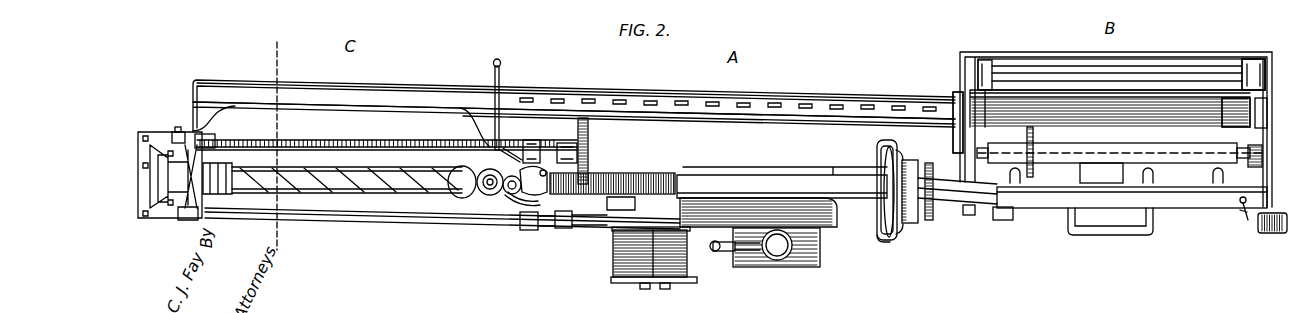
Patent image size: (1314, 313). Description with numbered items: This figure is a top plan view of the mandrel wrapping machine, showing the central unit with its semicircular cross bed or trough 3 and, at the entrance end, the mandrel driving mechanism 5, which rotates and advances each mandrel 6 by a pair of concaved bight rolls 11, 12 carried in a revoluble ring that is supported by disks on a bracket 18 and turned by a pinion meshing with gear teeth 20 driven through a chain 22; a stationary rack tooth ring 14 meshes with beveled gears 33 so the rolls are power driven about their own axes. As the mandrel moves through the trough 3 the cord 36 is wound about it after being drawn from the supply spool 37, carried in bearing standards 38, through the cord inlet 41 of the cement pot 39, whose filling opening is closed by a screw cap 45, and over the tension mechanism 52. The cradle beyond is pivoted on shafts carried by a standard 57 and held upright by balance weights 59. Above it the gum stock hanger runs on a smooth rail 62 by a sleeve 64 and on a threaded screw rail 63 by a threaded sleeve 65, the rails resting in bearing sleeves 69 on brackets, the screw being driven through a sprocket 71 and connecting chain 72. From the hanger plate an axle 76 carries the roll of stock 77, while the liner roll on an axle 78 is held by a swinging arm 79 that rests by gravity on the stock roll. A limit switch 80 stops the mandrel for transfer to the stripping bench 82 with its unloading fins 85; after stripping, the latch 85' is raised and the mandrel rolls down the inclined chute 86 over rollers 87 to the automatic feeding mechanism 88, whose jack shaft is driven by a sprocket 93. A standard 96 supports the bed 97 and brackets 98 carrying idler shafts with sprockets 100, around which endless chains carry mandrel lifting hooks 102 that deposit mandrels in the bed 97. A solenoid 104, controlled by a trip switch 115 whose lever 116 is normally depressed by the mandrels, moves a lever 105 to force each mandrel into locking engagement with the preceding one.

The cross bed or trough 3 is at (702, 187).
The mandrel driving mechanism 5 is at (260, 62).
The mandrel 6 is at (1020, 72).
The bight roll 11 is at (882, 209).
The bight roll 12 is at (885, 177).
The stationary rack tooth ring 14 is at (950, 171).
The bracket 18 is at (880, 237).
The gear teeth 20 is at (896, 242).
The chain 22 is at (934, 216).
The beveled gear 33 is at (912, 228).
The cord 36 is at (718, 252).
The supply spool 37 is at (670, 288).
The bearing standard 38 is at (640, 286).
The cement pot 39 is at (808, 267).
The cord inlet 41 is at (738, 253).
The screw cap 45 is at (776, 258).
The tension mechanism 52 is at (753, 200).
The standard 57 is at (160, 222).
The counter or balance weight 59 is at (230, 166).
The supporting rail 62 is at (373, 220).
The supporting rail 63 is at (378, 145).
The sleeve 64 is at (532, 231).
The sleeve 65 is at (532, 150).
The bearing sleeve 69 is at (205, 140).
The sprocket 71 is at (589, 130).
The connecting chain 72 is at (590, 170).
The axle 76 is at (486, 195).
The roll of stock 77 is at (507, 148).
The axle 78 is at (510, 200).
The swinging arm 79 is at (527, 222).
The limit switch 80 is at (166, 126).
The stripping bench or table 82 is at (381, 88).
The unloading fin 85 is at (323, 116).
The latch 85' is at (519, 92).
The inclined chute 86 is at (512, 93).
The roller 87 is at (587, 100).
The automatic feeding mechanism 88 is at (1186, 44).
The sprocket 93 is at (1034, 138).
The standard 96 is at (1117, 218).
The bed or trough 97 is at (1186, 209).
The bracket 98 is at (956, 130).
The sprocket 100 is at (1262, 157).
The mandrel lifting hook 102 is at (1267, 88).
The solenoid 104 is at (1268, 233).
The lever 105 is at (1242, 218).
The trip switch 115 is at (1002, 221).
The lever 116 is at (969, 216).